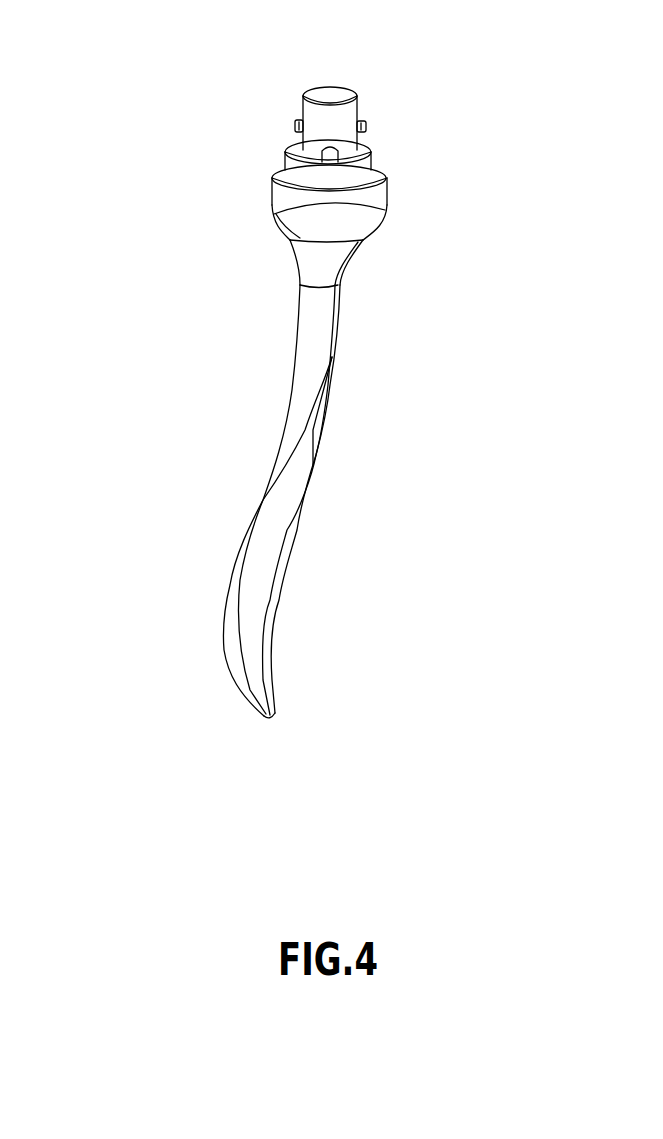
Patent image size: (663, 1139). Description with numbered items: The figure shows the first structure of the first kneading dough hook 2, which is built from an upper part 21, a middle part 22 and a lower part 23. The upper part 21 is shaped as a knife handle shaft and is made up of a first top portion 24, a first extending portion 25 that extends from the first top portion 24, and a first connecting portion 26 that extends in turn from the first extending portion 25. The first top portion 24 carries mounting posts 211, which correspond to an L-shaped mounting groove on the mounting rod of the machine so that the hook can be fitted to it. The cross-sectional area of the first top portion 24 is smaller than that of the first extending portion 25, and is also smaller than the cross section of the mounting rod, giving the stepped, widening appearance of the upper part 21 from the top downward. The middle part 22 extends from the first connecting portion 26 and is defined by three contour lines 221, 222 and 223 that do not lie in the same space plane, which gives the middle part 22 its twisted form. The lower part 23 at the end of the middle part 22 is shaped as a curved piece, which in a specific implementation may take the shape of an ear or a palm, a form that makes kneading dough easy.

The first kneading dough hook 2 is at (212, 517).
The upper part 21 is at (286, 104).
The mounting posts 211 is at (295, 126).
The first top portion 24 is at (337, 110).
The first extending portion 25 is at (365, 165).
The first connecting portion 26 is at (378, 190).
The middle part 22 is at (362, 319).
The contour line 221 is at (293, 365).
The contour line 222 is at (333, 342).
The contour line 223 is at (325, 415).
The lower part 23 is at (255, 643).